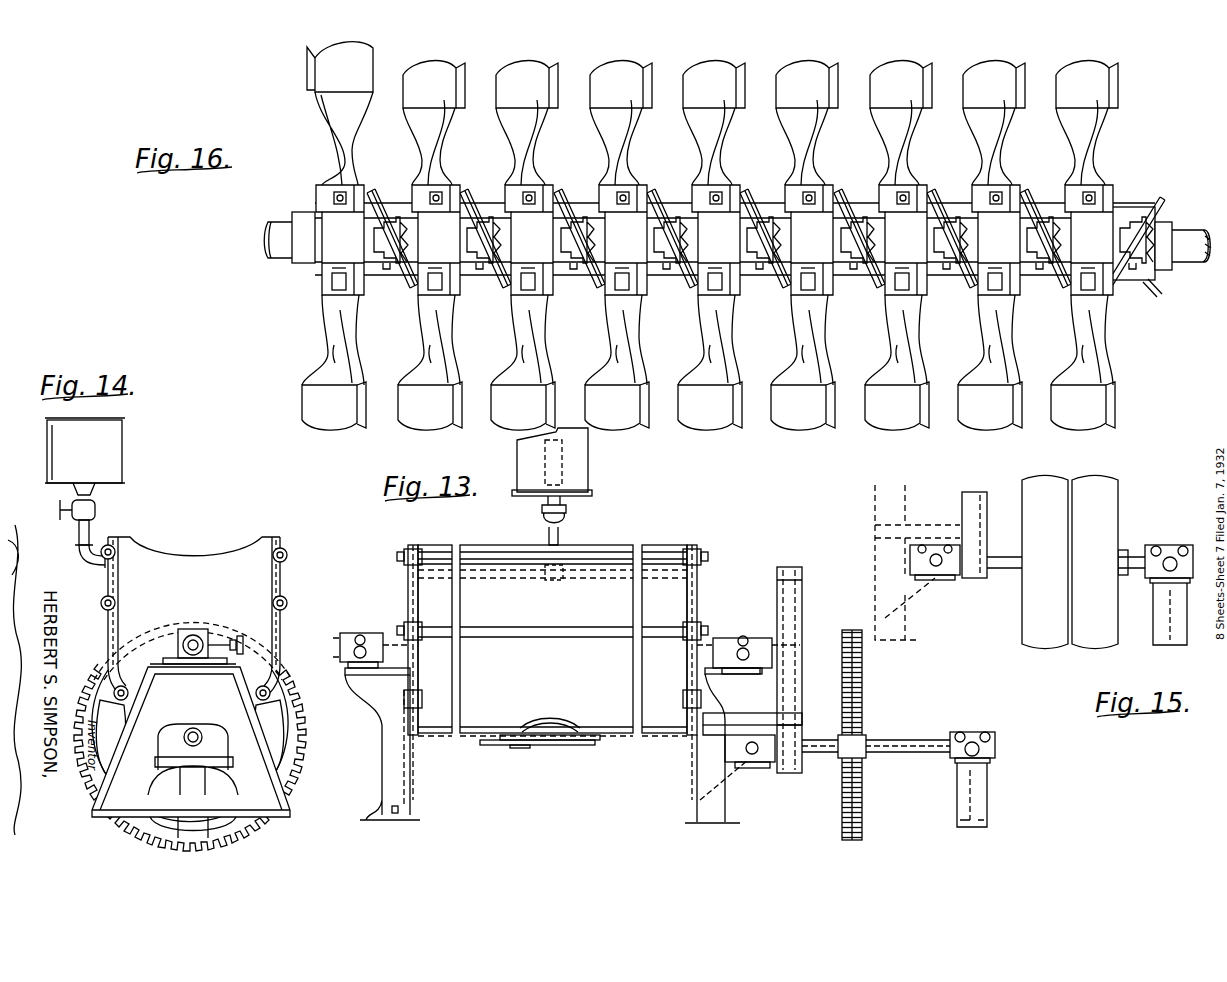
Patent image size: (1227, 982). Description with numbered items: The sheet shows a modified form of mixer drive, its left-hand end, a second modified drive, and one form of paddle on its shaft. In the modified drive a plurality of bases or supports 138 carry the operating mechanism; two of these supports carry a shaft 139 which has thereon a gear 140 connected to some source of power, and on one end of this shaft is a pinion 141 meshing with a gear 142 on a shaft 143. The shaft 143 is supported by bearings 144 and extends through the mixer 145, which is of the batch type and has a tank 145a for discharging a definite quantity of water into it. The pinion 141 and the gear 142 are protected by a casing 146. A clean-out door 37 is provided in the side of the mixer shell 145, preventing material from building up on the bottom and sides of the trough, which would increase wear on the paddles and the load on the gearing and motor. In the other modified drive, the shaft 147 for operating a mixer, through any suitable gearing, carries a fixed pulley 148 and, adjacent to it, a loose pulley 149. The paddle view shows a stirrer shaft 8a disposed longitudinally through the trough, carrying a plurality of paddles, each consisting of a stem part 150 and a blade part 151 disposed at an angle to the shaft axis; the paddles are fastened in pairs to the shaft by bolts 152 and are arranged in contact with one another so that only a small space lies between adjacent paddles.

In FIG. 16, the shaft 8a is at (1188, 238).
In FIG. 13, the clean-out door 37 is at (576, 745).
In FIG. 13, the bases or supports 138 is at (398, 787).
In FIG. 14, the bases or supports 138 is at (255, 748).
In FIG. 13, the shaft 139 is at (913, 728).
In FIG. 14, the shaft 139 is at (193, 727).
In FIG. 13, the gear 140 is at (862, 685).
In FIG. 14, the gear 140 is at (272, 709).
In FIG. 13, the pinion 141 is at (791, 773).
In FIG. 13, the gear 142 is at (800, 623).
In FIG. 13, the shaft 143 is at (403, 628).
In FIG. 14, the shaft 143 is at (204, 638).
In FIG. 13, the bearings 144 is at (350, 633).
In FIG. 14, the bearings 144 is at (194, 628).
In FIG. 13, the mixer 145 is at (626, 735).
In FIG. 14, the mixer 145 is at (170, 568).
In FIG. 13, the tank 145a is at (588, 474).
In FIG. 14, the tank 145a is at (112, 460).
In FIG. 13, the casing 146 is at (803, 594).
In FIG. 15, the shaft 147 is at (1005, 569).
In FIG. 15, the fixed pulley 148 is at (1090, 643).
In FIG. 15, the loose pulley 149 is at (1045, 643).
In FIG. 16, the stem part 150 is at (1093, 183).
In FIG. 16, the blade part 151 is at (510, 100).
In FIG. 16, the bolts 152 is at (432, 195).